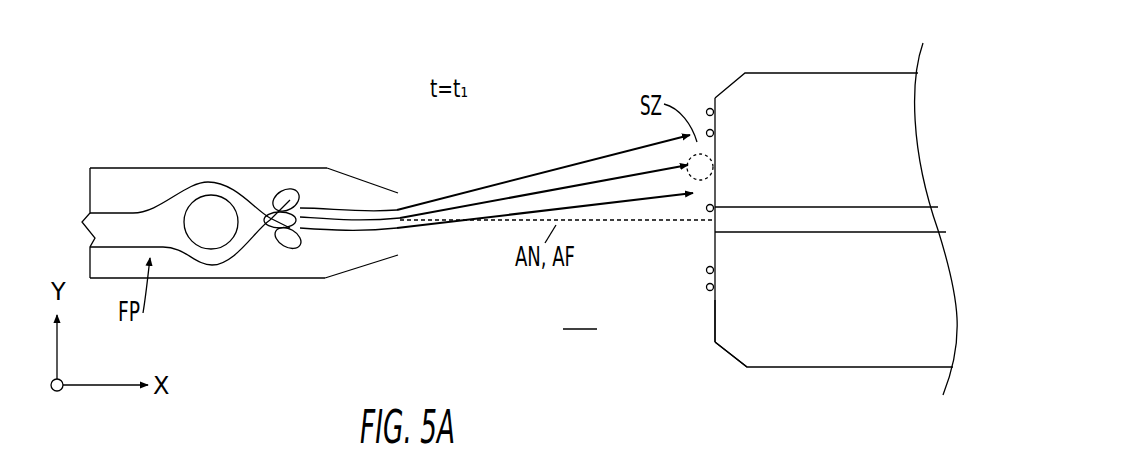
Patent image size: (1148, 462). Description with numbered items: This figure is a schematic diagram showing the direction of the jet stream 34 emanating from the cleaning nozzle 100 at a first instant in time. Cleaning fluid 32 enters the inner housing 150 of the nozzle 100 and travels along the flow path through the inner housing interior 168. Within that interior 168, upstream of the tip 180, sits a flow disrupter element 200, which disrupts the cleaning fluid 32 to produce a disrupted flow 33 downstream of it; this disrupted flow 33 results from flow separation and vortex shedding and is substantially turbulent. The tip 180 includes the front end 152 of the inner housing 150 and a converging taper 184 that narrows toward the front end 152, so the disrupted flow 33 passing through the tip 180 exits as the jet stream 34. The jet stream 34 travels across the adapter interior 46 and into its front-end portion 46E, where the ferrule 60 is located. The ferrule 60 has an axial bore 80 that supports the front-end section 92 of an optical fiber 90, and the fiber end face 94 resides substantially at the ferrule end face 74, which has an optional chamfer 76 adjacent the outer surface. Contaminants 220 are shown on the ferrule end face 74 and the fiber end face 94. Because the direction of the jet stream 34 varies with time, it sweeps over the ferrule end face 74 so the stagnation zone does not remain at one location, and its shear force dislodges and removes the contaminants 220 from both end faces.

The cleaning nozzle 100 is at (148, 70).
The cleaning fluid 32 is at (118, 212).
The inner housing 150 is at (187, 123).
The inner housing interior 168 is at (185, 268).
The converging taper 184 is at (352, 175).
The front end of inner housing 152 is at (403, 255).
The flow disrupter element 200 is at (212, 221).
The disrupted flow 33 is at (296, 258).
The tip 180 is at (402, 190).
The jet stream 34 is at (557, 160).
The adapter interior 46 is at (463, 315).
The front-end portion of adapter interior 46E is at (580, 315).
The ferrule 60 is at (836, 72).
The fiber end face 94 is at (708, 227).
The front-end section of optical fiber 92 is at (772, 217).
The axial bore 80 is at (823, 207).
The optical fiber 90 is at (868, 238).
The contaminants 220 is at (707, 130).
The ferrule end face 74 is at (712, 312).
The chamfer 76 is at (727, 352).